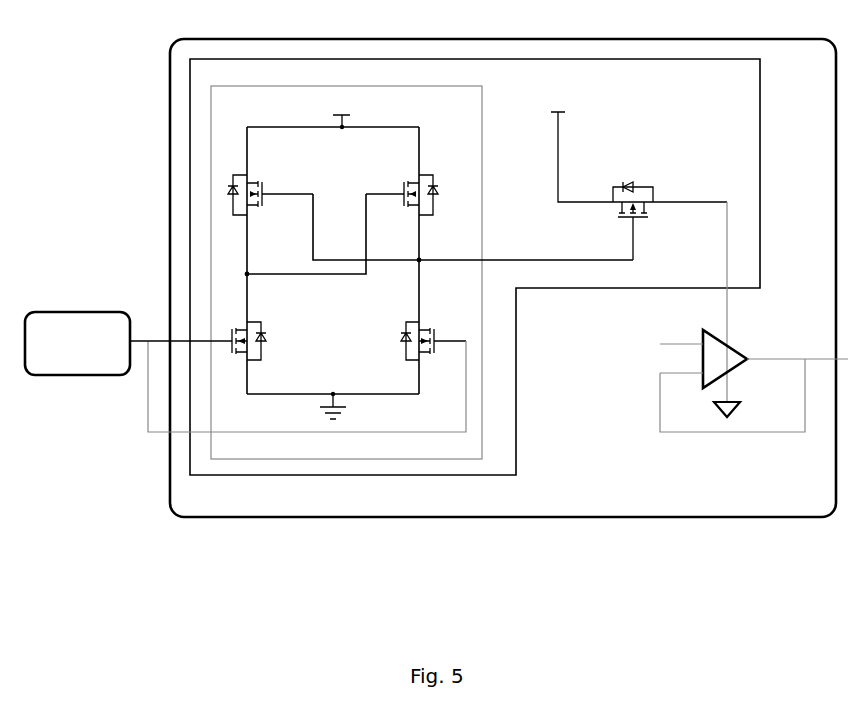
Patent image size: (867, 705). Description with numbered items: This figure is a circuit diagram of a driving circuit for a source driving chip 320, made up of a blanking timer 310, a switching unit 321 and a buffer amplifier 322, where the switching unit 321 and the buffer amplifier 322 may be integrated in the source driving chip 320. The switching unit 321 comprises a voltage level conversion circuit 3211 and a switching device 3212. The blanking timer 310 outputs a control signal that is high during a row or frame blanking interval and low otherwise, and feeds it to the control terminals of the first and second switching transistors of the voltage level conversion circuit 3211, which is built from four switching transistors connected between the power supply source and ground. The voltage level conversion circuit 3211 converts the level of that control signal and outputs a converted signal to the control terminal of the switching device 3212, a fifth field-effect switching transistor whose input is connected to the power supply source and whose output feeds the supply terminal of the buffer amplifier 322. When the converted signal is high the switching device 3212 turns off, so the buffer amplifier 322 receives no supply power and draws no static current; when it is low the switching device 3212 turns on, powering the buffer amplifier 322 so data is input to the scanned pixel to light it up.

The blanking timer 310 is at (78, 312).
The source driving chip 320 is at (482, 38).
The switching unit 321 is at (762, 157).
The voltage level conversion circuit 3211 is at (482, 241).
The switching device 3212 is at (648, 184).
The buffer amplifier 322 is at (732, 346).